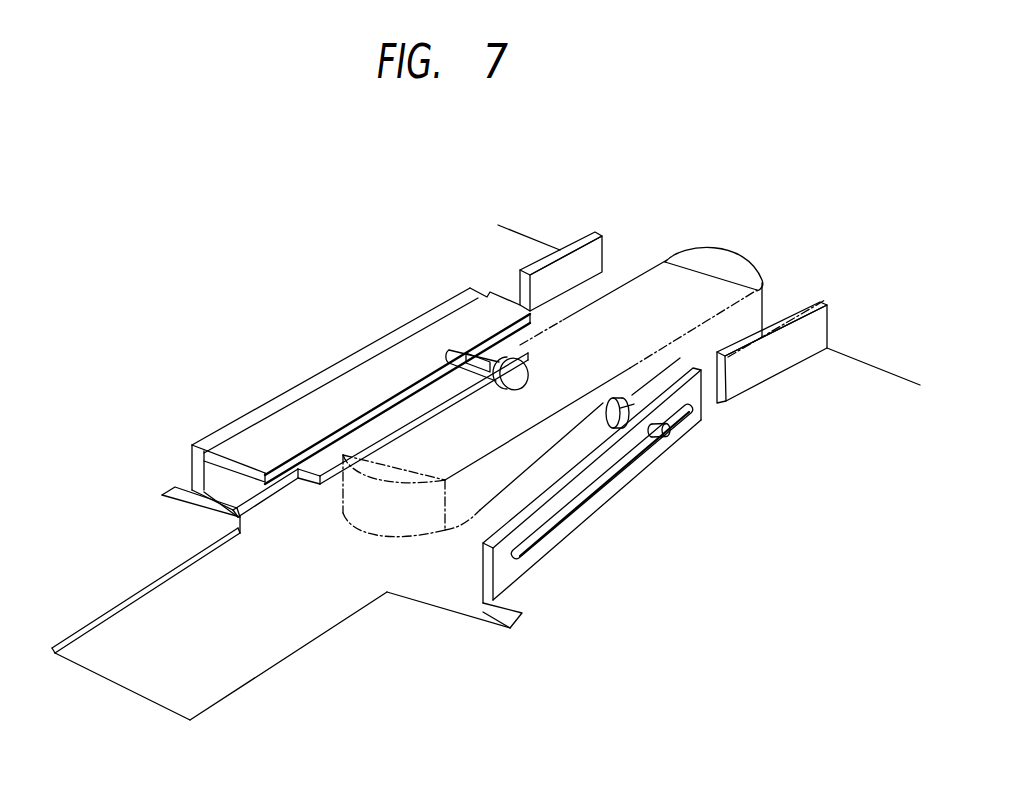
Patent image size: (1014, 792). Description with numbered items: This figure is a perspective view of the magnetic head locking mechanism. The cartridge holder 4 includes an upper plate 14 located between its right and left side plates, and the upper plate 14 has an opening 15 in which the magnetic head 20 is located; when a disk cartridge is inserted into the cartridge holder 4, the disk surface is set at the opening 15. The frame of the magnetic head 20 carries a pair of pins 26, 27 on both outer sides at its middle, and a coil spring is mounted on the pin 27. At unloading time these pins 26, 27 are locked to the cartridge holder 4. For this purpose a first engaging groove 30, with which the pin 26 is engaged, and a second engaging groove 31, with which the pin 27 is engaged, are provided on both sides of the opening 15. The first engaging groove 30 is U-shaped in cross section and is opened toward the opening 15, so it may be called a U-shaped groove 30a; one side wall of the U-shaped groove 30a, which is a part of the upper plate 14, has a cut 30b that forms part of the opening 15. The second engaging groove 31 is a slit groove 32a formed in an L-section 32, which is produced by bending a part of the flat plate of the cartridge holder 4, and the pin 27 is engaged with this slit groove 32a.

The cartridge holder 4 is at (837, 438).
The upper plate 14 is at (180, 535).
The opening 15 is at (335, 598).
The magnetic head 20 is at (750, 262).
The pin 26 is at (476, 366).
The pin 27 is at (626, 400).
The first engaging groove 30 is at (346, 429).
The U-shaped groove 30a is at (314, 485).
The cut 30b is at (283, 490).
The second engaging groove 31 is at (612, 498).
The L-section 32 is at (592, 498).
The slit groove 32a is at (568, 518).